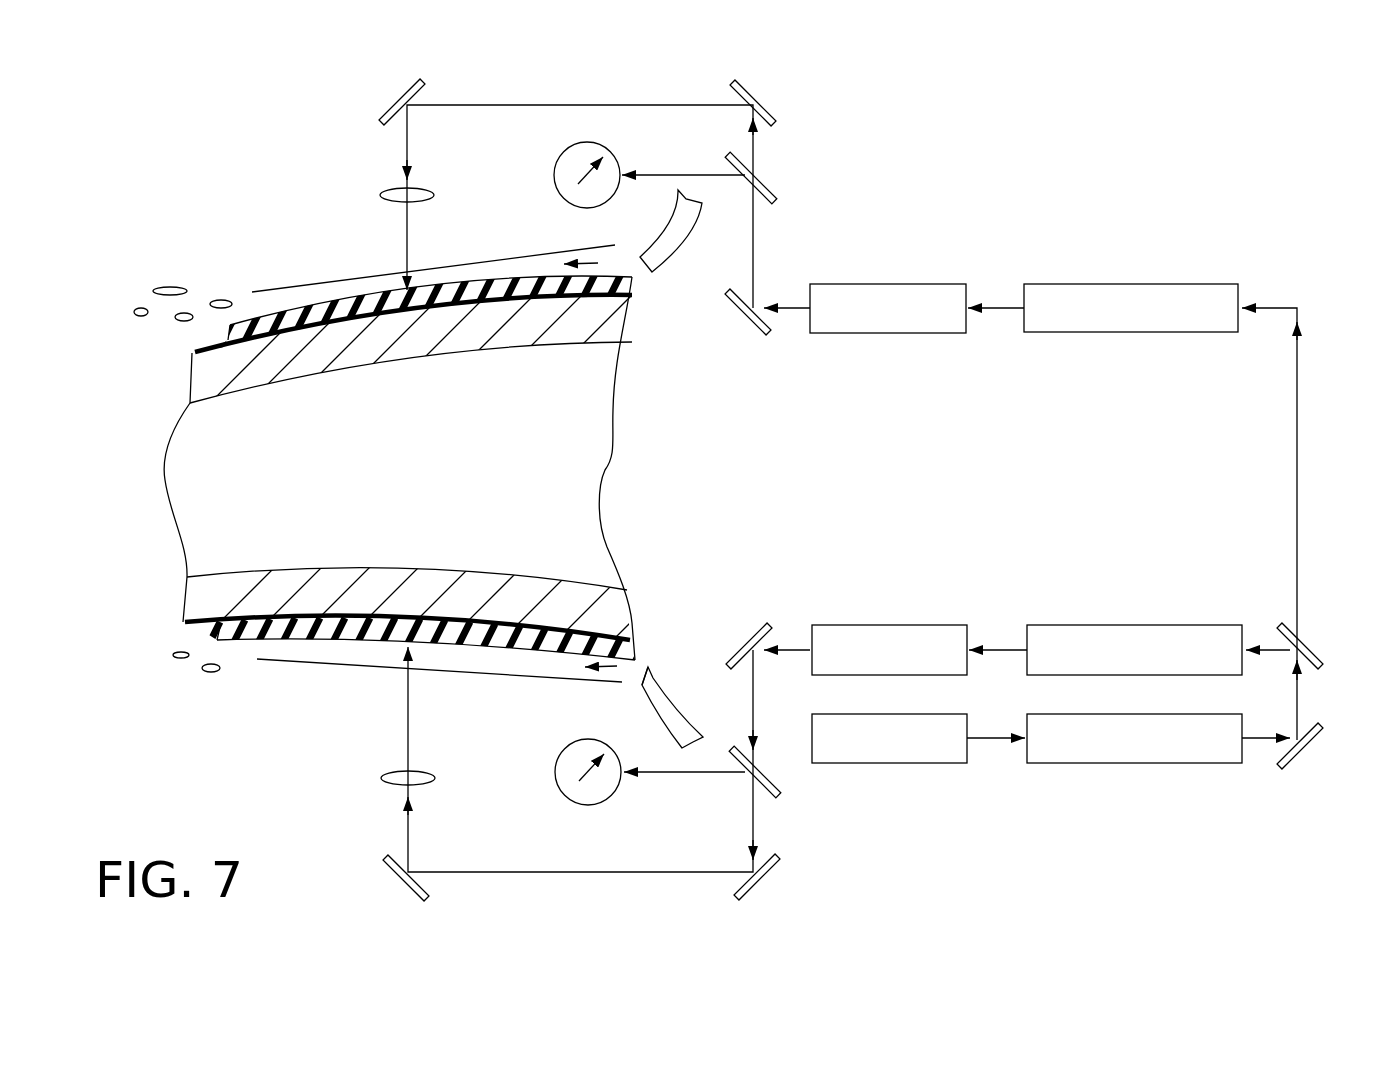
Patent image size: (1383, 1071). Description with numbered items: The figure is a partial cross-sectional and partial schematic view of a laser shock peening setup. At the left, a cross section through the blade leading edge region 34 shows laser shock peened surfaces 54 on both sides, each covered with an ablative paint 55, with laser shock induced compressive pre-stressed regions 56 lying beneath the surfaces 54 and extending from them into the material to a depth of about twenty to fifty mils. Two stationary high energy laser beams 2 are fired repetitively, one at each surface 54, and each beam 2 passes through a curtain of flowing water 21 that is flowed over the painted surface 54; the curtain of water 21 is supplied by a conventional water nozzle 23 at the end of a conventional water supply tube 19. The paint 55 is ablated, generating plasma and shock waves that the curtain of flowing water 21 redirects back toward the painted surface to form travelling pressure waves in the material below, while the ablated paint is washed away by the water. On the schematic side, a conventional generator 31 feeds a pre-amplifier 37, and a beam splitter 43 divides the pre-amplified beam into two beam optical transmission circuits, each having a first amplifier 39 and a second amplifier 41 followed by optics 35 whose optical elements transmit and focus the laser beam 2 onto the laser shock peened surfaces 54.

The laser beam 2 is at (407, 233).
The water supply tube 19 is at (688, 695).
The curtain of flowing water 21 is at (515, 664).
The water nozzle 23 is at (646, 690).
The generator 31 is at (918, 763).
The leading edge region 34 is at (411, 479).
The optics 35 is at (784, 163).
The pre-amplifier 37 is at (1093, 763).
The first amplifier 39 is at (1118, 284).
The second amplifier 41 is at (860, 284).
The beam splitter 43 is at (1330, 705).
The laser shock peened surface 54 is at (196, 352).
The ablative paint 55 is at (235, 648).
The compressive pre-stressed region 56 is at (377, 580).